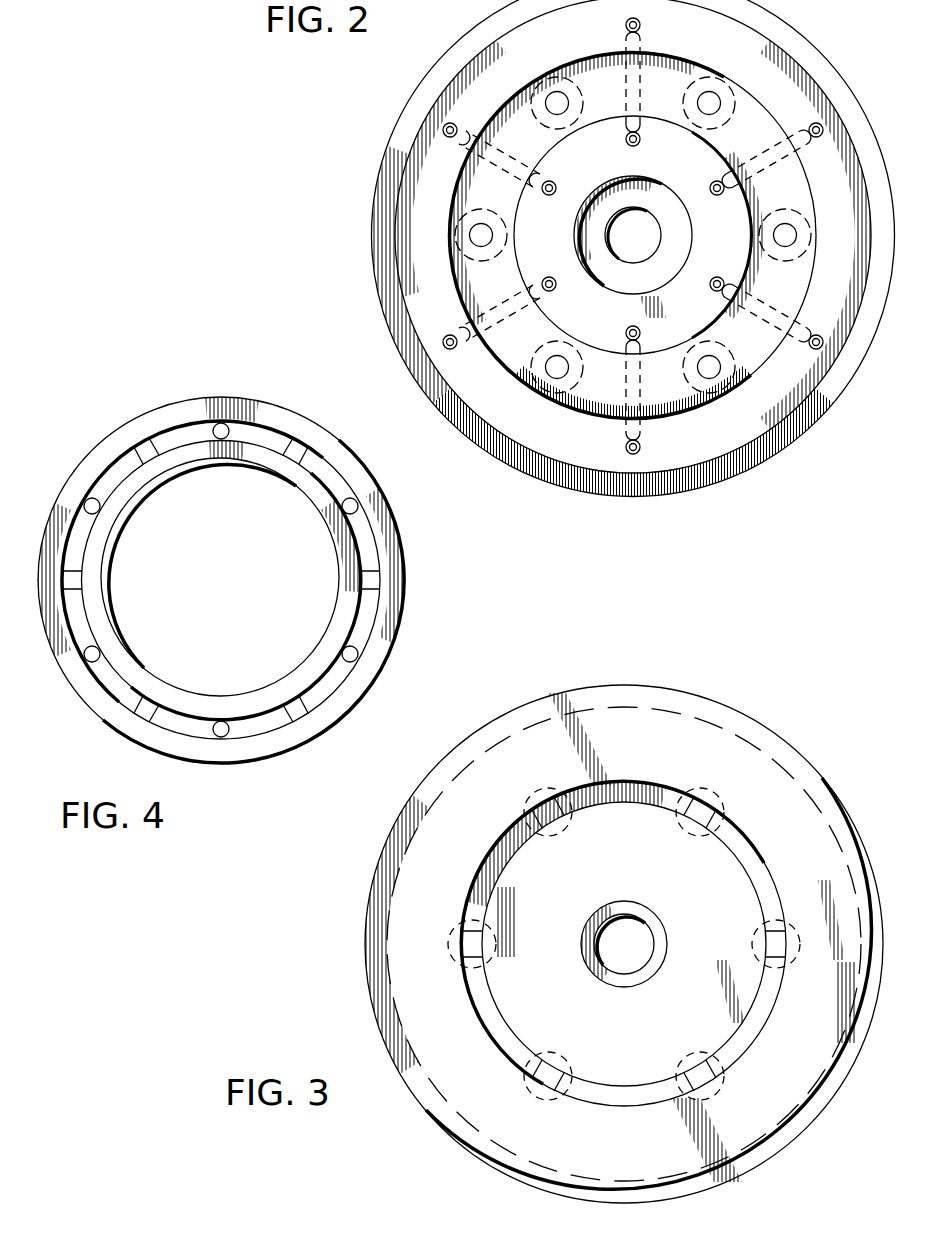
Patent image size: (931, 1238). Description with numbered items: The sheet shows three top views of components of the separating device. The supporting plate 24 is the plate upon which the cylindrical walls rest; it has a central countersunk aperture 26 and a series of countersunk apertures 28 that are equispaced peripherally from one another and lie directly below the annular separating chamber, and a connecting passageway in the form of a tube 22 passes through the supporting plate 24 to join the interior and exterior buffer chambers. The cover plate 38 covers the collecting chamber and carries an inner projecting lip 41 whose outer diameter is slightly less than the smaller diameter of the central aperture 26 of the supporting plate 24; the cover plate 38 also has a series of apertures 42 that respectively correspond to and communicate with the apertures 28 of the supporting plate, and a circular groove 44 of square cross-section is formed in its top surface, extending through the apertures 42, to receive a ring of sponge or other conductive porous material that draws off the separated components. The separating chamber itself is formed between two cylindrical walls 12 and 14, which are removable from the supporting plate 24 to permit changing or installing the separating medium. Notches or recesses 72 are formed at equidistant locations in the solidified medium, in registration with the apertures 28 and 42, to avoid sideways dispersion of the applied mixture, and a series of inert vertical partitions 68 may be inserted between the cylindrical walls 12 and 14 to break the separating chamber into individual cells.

In FIG. 4, the cylindrical wall 12 is at (401, 539).
In FIG. 4, the cylindrical wall 14 is at (278, 470).
In FIG. 2, the tube 22 is at (642, 25).
In FIG. 2, the supporting plate 24 is at (369, 276).
In FIG. 2, the central countersunk aperture 26 is at (612, 291).
In FIG. 2, the countersunk apertures 28 is at (553, 132).
In FIG. 3, the cover plate 38 is at (341, 973).
In FIG. 3, the inner projecting lip 41 is at (607, 978).
In FIG. 3, the apertures 42 is at (530, 823).
In FIG. 3, the circular groove 44 is at (765, 888).
In FIG. 4, the vertical partitions 68 is at (147, 437).
In FIG. 4, the notches or recesses 72 is at (215, 422).